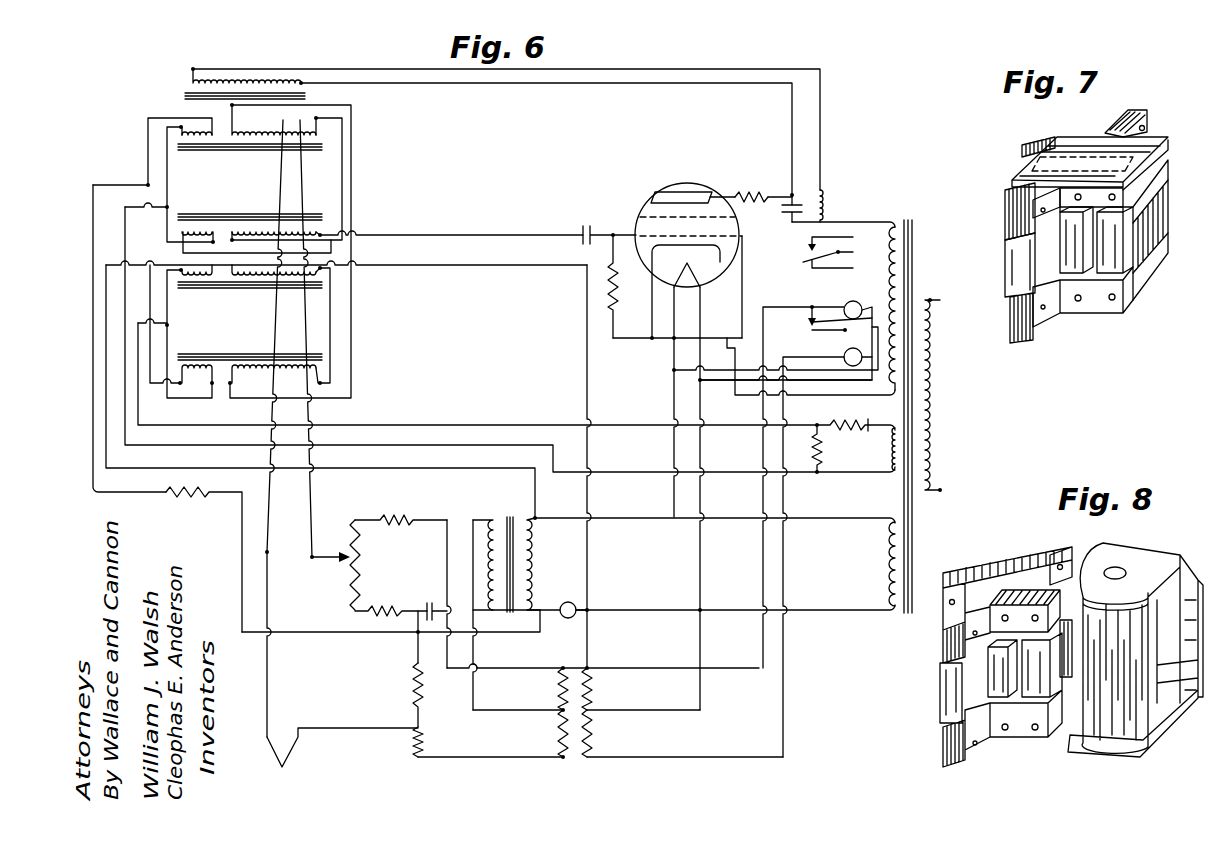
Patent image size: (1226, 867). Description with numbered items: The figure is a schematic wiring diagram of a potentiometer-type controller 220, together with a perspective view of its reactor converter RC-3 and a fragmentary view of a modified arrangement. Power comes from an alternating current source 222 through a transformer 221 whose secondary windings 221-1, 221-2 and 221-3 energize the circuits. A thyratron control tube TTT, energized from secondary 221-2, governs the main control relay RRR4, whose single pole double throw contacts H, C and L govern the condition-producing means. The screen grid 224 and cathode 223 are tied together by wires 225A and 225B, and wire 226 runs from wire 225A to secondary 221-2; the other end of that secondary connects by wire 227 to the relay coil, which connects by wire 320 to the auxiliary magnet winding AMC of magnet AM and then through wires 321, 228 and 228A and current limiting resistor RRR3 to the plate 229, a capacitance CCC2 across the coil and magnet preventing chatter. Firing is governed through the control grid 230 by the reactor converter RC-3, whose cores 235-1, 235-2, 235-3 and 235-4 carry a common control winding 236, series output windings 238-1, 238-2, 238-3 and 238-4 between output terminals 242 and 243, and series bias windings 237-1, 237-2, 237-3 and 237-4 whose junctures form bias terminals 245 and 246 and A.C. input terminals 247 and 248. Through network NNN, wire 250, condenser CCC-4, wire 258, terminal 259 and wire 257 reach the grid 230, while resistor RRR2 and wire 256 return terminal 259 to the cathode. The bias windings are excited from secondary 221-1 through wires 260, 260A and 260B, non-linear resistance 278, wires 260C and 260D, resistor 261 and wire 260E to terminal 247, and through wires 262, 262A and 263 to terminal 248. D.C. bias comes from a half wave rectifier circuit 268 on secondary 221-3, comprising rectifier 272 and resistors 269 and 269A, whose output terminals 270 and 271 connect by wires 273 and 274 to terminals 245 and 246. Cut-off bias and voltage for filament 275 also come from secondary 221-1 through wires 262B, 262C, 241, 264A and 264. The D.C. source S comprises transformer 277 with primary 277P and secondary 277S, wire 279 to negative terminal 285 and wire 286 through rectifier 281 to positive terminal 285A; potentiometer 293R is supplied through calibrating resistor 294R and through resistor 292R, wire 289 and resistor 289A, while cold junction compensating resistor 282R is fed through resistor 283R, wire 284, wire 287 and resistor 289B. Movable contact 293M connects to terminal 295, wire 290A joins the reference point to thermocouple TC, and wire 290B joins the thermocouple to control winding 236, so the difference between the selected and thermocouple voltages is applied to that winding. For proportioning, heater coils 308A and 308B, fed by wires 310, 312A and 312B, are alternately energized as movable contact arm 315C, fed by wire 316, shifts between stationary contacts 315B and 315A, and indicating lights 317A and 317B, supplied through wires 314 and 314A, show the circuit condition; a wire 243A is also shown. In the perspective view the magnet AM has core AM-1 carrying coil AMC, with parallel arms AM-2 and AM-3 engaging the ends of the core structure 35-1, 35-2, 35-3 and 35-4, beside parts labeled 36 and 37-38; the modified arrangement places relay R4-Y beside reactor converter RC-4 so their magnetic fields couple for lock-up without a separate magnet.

In FIG. 6, the wire 320 is at (690, 66).
In FIG. 6, the wire 321 is at (686, 84).
In FIG. 6, the auxiliary magnet AM is at (178, 88).
In FIG. 7, the auxiliary magnet AM is at (1170, 193).
In FIG. 6, the auxiliary magnet winding AMC is at (218, 76).
In FIG. 7, the auxiliary magnet winding AMC is at (1158, 240).
In FIG. 6, the magnet core AM-1 is at (308, 97).
In FIG. 7, the magnet core AM-1 is at (1148, 275).
In FIG. 6, the reactor converter RC-3 is at (143, 158).
In FIG. 7, the reactor converter RC-3 is at (1030, 130).
In FIG. 6, the A.C. input terminal 247 is at (146, 182).
In FIG. 6, the bias terminal 245 is at (167, 206).
In FIG. 6, the bias winding 237-2 is at (196, 145).
In FIG. 6, the winding 235-2 is at (224, 148).
In FIG. 6, the output winding 238-2 is at (304, 145).
In FIG. 6, the bias winding 237-1 is at (218, 212).
In FIG. 6, the winding 235-1 is at (236, 216).
In FIG. 6, the output winding 238-1 is at (304, 220).
In FIG. 6, the output terminal 242 is at (322, 233).
In FIG. 6, the A.C. input terminal 248 is at (183, 250).
In FIG. 6, the output terminal 243 is at (324, 270).
In FIG. 6, the bias winding 237-4 is at (198, 280).
In FIG. 6, the winding 235-4 is at (226, 284).
In FIG. 6, the output winding 238-4 is at (306, 280).
In FIG. 6, the bias terminal 246 is at (170, 325).
In FIG. 6, the common control winding 236 is at (276, 317).
In FIG. 6, the bias winding 237-3 is at (196, 362).
In FIG. 6, the winding 235-3 is at (246, 358).
In FIG. 6, the output winding 238-3 is at (310, 358).
In FIG. 6, the wire 260E is at (98, 482).
In FIG. 6, the resistor 261 is at (198, 495).
In FIG. 6, the wire 260D is at (300, 634).
In FIG. 6, the wire 263 is at (360, 469).
In FIG. 6, the wire 273 is at (402, 447).
In FIG. 6, the wire 274 is at (406, 424).
In FIG. 6, the terminal 295 is at (312, 557).
In FIG. 6, the movable contact 293M is at (324, 566).
In FIG. 6, the thermocouple TC is at (342, 760).
In FIG. 6, the wire 290B is at (270, 700).
In FIG. 6, the wire 290A is at (312, 732).
In FIG. 6, the D.C. source S is at (346, 530).
In FIG. 6, the resistor 292R is at (390, 528).
In FIG. 6, the calibrating resistor 294R is at (385, 606).
In FIG. 6, the rectifier 281 is at (430, 600).
In FIG. 6, the positive terminal 285A is at (415, 600).
In FIG. 6, the potentiometer 293R is at (345, 585).
In FIG. 6, the wire 284 is at (416, 648).
In FIG. 6, the current limiting resistor 283R is at (414, 688).
In FIG. 6, the cold junction compensating resistance 282R is at (414, 755).
In FIG. 6, the wire 287 is at (462, 760).
In FIG. 6, the wire 279 is at (476, 645).
In FIG. 6, the wire 289 is at (490, 672).
In FIG. 6, the negative terminal 285 is at (560, 714).
In FIG. 6, the resistor 289A is at (556, 686).
In FIG. 6, the resistor 289B is at (558, 740).
In FIG. 6, the transformer secondary 277S is at (490, 522).
In FIG. 6, the transformer 277 is at (510, 516).
In FIG. 6, the transformer primary 277P is at (534, 530).
In FIG. 6, the wire 286 is at (484, 613).
In FIG. 6, the non-linear resistance 278 is at (562, 604).
In FIG. 6, the wire 260B is at (576, 600).
In FIG. 6, the wire 260C is at (553, 614).
In FIG. 6, the conductor 243A is at (590, 614).
In FIG. 6, the wire 260A is at (608, 610).
In FIG. 6, the wire 312A is at (612, 668).
In FIG. 6, the heater coil 308A is at (609, 689).
In FIG. 6, the heater coil 308B is at (609, 733).
In FIG. 6, the wire 310 is at (686, 712).
In FIG. 6, the wire 312B is at (678, 758).
In FIG. 6, the wire 241 is at (584, 328).
In FIG. 6, the wire 250 is at (428, 234).
In FIG. 6, the wire 262A is at (612, 519).
In FIG. 6, the wire 264A is at (698, 565).
In FIG. 6, the wire 262B is at (672, 446).
In FIG. 6, the wire 262C is at (672, 370).
In FIG. 6, the wire 316 is at (686, 372).
In FIG. 6, the wire 314 is at (702, 384).
In FIG. 6, the wire 256 is at (640, 340).
In FIG. 6, the wire 225B is at (660, 345).
In FIG. 6, the control tube TTT is at (650, 195).
In FIG. 6, the plate 229 is at (678, 192).
In FIG. 6, the control grid 230 is at (687, 227).
In FIG. 6, the screen grid 224 is at (691, 280).
In FIG. 6, the cathode 223 is at (722, 250).
In FIG. 6, the filament 275 is at (683, 268).
In FIG. 6, the resistor RRR2 is at (629, 285).
In FIG. 6, the condenser CCC-4 is at (580, 230).
In FIG. 6, the wire 258 is at (594, 242).
In FIG. 6, the terminal 259 is at (605, 222).
In FIG. 6, the network NNN is at (600, 218).
In FIG. 6, the wire 257 is at (626, 230).
In FIG. 6, the wire 228A is at (724, 190).
In FIG. 6, the current limiting resistor RRR3 is at (750, 182).
In FIG. 6, the wire 228 is at (780, 190).
In FIG. 6, the capacitance CCC2 is at (784, 218).
In FIG. 6, the main control relay RRR4 is at (826, 208).
In FIG. 6, the wire 227 is at (845, 222).
In FIG. 6, the secondary winding 221-2 is at (892, 300).
In FIG. 6, the controller 220 is at (912, 238).
In FIG. 6, the main power control relay contact L is at (839, 240).
In FIG. 6, the main power control relay contact C is at (837, 253).
In FIG. 6, the main power control relay contact H is at (842, 268).
In FIG. 6, the stationary contact 315A is at (800, 306).
In FIG. 6, the indicating light 317A is at (848, 301).
In FIG. 6, the wire 314A is at (840, 319).
In FIG. 6, the movable contact arm 315C is at (810, 330).
In FIG. 6, the stationary contact 315B is at (790, 356).
In FIG. 6, the indicating light 317B is at (852, 348).
In FIG. 6, the wire 226 is at (736, 345).
In FIG. 6, the wire 264 is at (702, 300).
In FIG. 6, the wire 225A is at (718, 338).
In FIG. 6, the rectifier circuit 268 is at (840, 423).
In FIG. 6, the resistor 269 is at (860, 423).
In FIG. 6, the rectifier 272 is at (872, 432).
In FIG. 6, the output terminal 271 is at (816, 428).
In FIG. 6, the secondary winding 221-3 is at (892, 454).
In FIG. 6, the resistor 269A is at (820, 466).
In FIG. 6, the output terminal 270 is at (815, 474).
In FIG. 6, the wire 262 is at (812, 520).
In FIG. 6, the secondary winding 221-1 is at (892, 572).
In FIG. 6, the wire 260 is at (808, 612).
In FIG. 6, the transformer 221 is at (900, 518).
In FIG. 6, the alternating current source 222 is at (938, 488).
In FIG. 7, the core arm AM-3 is at (1140, 135).
In FIG. 7, the composite core structure 35-1 is at (1134, 112).
In FIG. 7, the composite core structure 35-2 is at (1020, 152).
In FIG. 7, the pole piece 36 is at (1066, 280).
In FIG. 7, the composite core structure 35-3 is at (1045, 325).
In FIG. 7, the composite core structure 35-4 is at (1112, 302).
In FIG. 7, the core arm AM-2 is at (1100, 315).
In FIG. 7, the laminated core 37-38 is at (1016, 260).
In FIG. 8, the reactor converter RC-4 is at (1012, 565).
In FIG. 8, the relay R4-Y is at (1115, 562).